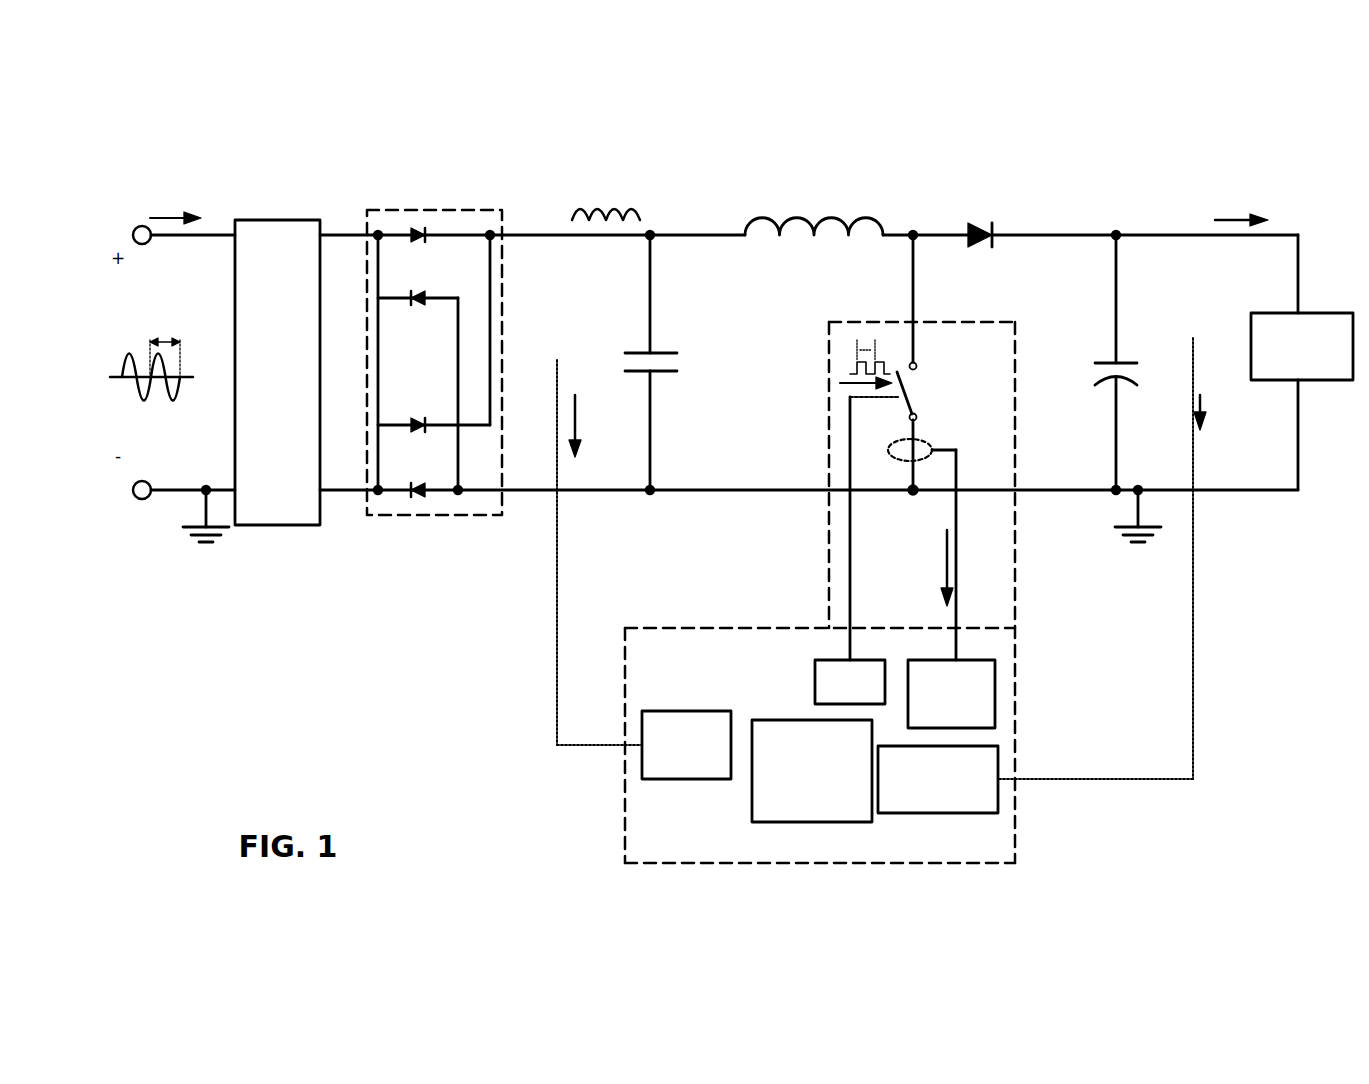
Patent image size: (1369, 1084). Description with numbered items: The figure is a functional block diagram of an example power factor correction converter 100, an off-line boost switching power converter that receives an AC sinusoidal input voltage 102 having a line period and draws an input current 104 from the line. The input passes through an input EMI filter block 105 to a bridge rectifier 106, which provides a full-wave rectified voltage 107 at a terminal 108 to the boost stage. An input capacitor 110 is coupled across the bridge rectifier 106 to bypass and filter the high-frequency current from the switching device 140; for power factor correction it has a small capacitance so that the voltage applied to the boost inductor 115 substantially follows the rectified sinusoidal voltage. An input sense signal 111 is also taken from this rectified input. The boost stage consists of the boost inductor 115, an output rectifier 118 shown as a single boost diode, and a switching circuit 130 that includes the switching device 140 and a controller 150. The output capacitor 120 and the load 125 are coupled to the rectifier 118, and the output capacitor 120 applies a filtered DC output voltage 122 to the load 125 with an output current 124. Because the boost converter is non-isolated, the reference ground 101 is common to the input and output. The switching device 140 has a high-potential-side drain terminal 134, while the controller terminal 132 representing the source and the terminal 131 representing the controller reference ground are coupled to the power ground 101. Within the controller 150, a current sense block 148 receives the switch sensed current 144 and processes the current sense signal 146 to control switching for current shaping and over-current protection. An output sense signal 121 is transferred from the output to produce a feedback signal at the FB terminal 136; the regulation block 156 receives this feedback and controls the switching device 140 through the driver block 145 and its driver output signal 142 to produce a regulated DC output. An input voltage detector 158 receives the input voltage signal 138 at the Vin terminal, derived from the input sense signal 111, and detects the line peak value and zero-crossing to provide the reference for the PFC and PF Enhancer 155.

The PFC converter 100 is at (1169, 131).
The reference ground 101 is at (217, 541).
The AC sinusoidal input voltage 102 is at (120, 350).
The input current 104 is at (195, 170).
The input EMI filter block 105 is at (297, 181).
The bridge rectifier 106 is at (428, 200).
The full-wave rectified voltage 107 is at (643, 194).
The terminal 108 is at (657, 219).
The input capacitor 110 is at (670, 342).
The input sense signal 111 is at (578, 418).
The boost inductor 115 is at (812, 210).
The output rectifier 118 is at (987, 212).
The output capacitor 120 is at (1131, 350).
The output sense signal 121 is at (1208, 384).
The output voltage 122 is at (1152, 206).
The output current 124 is at (1238, 211).
The load 125 is at (1318, 305).
The switching circuit 130 is at (1003, 319).
The terminal G 131 is at (1029, 466).
The terminal S 132 is at (810, 460).
The terminal D 134 is at (930, 307).
The FB terminal 136 is at (1058, 752).
The input voltage signal 138 is at (598, 710).
The switching device 140 is at (922, 400).
The driver output signal 142 is at (834, 380).
The switch sensed current 144 is at (930, 436).
The driver block 145 is at (810, 669).
The current sense signal 146 is at (936, 582).
The current sense block 148 is at (994, 646).
The controller 150 is at (862, 846).
The PFC and PF Enhancer 155 is at (770, 712).
The regulation block 156 is at (998, 744).
The input voltage detector 158 is at (650, 710).